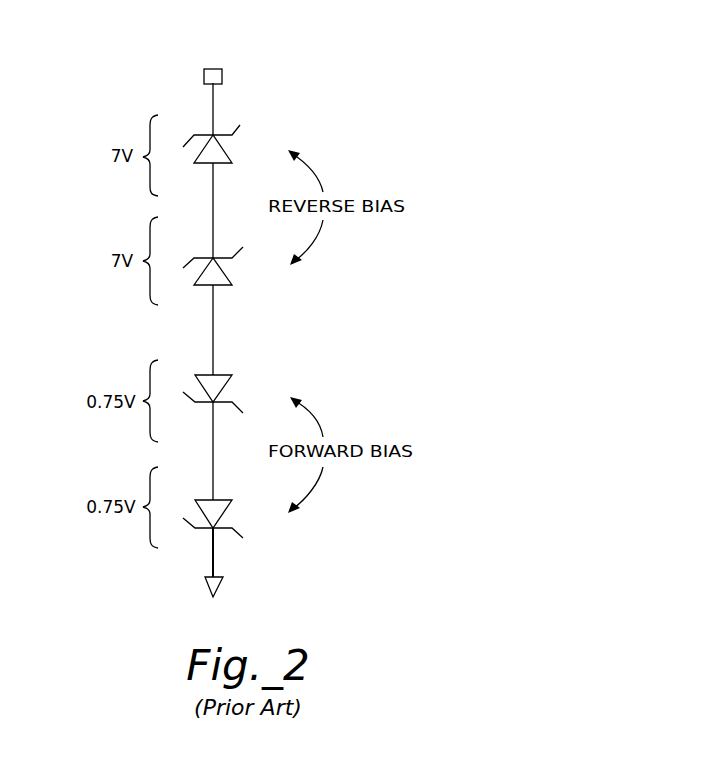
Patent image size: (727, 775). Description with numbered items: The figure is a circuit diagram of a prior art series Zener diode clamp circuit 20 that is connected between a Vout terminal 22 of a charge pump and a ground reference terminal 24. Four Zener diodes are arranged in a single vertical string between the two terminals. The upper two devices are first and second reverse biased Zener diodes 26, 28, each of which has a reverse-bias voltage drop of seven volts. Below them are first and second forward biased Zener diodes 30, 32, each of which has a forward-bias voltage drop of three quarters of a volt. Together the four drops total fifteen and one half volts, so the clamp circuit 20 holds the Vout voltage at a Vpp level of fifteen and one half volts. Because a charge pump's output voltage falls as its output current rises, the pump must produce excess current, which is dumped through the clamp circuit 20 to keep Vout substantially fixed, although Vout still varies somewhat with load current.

The series Zener diode clamp circuit 20 is at (492, 75).
The Vout terminal 22 is at (222, 76).
The ground reference terminal 24 is at (219, 588).
The first reverse biased Zener diode 26 is at (229, 157).
The second reverse biased Zener diode 28 is at (231, 280).
The first forward biased Zener diode 30 is at (224, 385).
The second forward biased Zener diode 32 is at (225, 509).